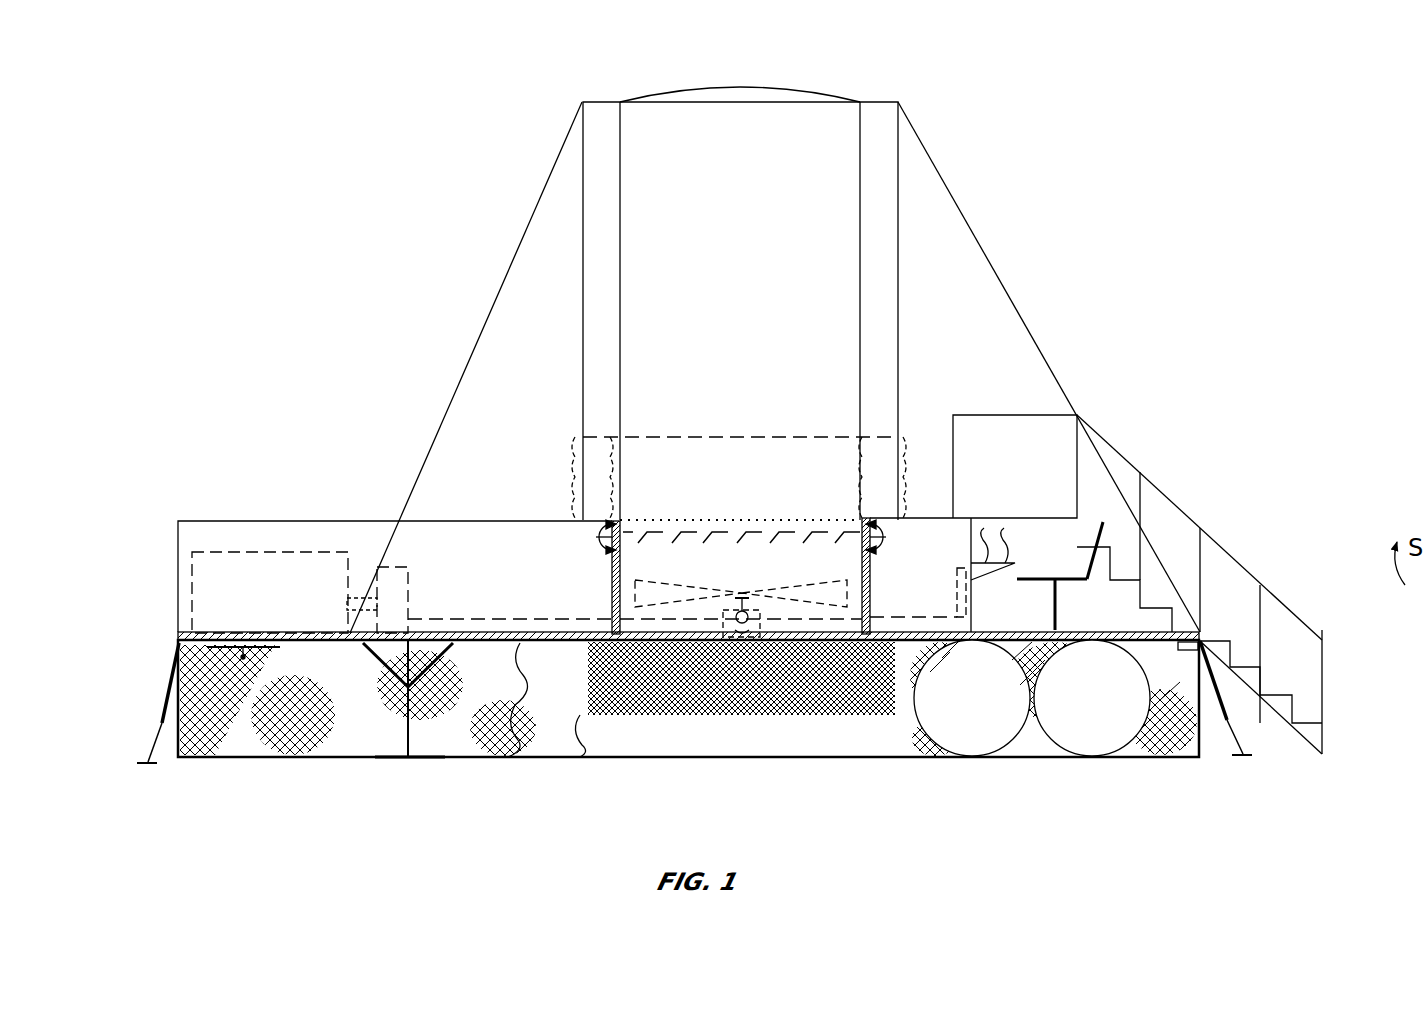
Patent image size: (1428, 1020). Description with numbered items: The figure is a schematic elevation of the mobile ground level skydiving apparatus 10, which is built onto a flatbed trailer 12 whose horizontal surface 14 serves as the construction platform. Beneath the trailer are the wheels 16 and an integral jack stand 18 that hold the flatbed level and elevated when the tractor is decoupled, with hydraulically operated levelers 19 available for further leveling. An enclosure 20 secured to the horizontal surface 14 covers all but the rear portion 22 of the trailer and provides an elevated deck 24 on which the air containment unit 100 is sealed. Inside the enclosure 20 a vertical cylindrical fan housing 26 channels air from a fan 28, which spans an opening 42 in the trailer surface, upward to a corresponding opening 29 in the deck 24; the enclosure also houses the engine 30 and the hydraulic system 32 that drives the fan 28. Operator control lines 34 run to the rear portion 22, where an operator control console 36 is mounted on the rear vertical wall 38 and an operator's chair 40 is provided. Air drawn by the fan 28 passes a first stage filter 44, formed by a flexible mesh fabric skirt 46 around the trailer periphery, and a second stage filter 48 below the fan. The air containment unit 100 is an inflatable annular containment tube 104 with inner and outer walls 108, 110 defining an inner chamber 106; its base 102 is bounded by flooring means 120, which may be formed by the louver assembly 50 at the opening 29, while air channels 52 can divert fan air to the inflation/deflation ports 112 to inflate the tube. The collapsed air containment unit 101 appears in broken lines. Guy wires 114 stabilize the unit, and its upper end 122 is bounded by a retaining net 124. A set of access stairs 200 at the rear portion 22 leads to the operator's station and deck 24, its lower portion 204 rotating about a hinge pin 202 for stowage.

The mobile ground level skydiving apparatus 10 is at (333, 158).
The flatbed trailer 12 is at (1256, 730).
The horizontal surface 14 is at (488, 630).
The wheels 16 is at (932, 742).
The jack stand 18 is at (405, 727).
The hydraulically operated levelers 19 is at (150, 762).
The enclosure 20 is at (208, 545).
The rear portion 22 is at (1105, 772).
The elevated deck 24 is at (255, 522).
The cylindrical fan housing 26 is at (610, 585).
The fan 28 is at (693, 590).
The opening 29 is at (632, 512).
The engine 30 is at (333, 562).
The hydraulic system 32 is at (393, 580).
The operator control lines 34 is at (958, 583).
The operator control console 36 is at (998, 518).
The rear vertical wall 38 is at (967, 537).
The operator's chair 40 is at (1037, 578).
The opening 42 is at (663, 642).
The first stage filter 44 is at (463, 768).
The flexible mesh fabric skirt 46 is at (510, 757).
The second stage filter 48 is at (580, 720).
The louver assembly 50 is at (690, 532).
The air channels 52 is at (597, 537).
The air containment unit 100 is at (591, 100).
The collapsed air containment unit 101 is at (588, 415).
The base 102 is at (575, 494).
The annular containment tube 104 is at (610, 155).
The inner chamber 106 is at (760, 323).
The inner wall 108 is at (622, 228).
The outer wall 110 is at (582, 233).
The inflation/deflation ports 112 is at (603, 513).
The guy wires 114 is at (495, 297).
The flooring means 120 is at (812, 520).
The upper end 122 is at (907, 98).
The retaining net 124 is at (772, 90).
The access stairs 200 is at (1198, 478).
The hinge pin 202 is at (1200, 632).
The lower portion 204 is at (1282, 693).